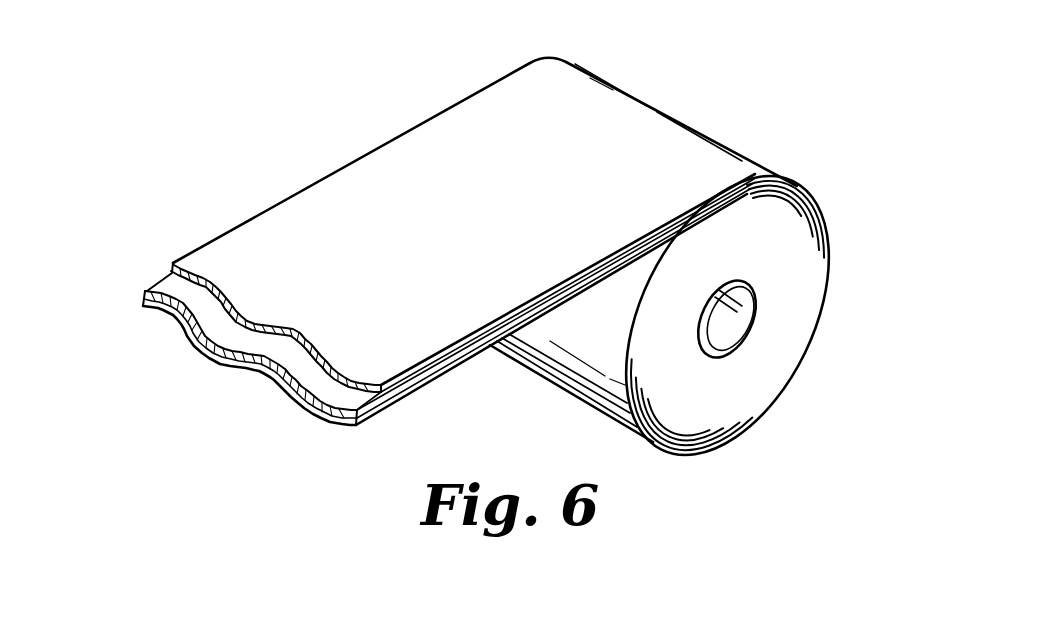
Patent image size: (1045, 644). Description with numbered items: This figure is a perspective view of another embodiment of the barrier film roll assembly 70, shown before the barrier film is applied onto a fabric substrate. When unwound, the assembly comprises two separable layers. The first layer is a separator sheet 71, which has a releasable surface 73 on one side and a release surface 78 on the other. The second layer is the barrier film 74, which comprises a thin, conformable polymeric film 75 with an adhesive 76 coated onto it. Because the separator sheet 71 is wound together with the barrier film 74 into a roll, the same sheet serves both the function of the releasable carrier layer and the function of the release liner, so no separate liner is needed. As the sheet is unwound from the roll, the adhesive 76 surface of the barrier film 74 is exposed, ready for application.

The roll of laminated sheet material 70 is at (706, 57).
The separator sheet 71 is at (348, 187).
The releasable surface 73 is at (196, 285).
The barrier film 74 is at (151, 265).
The thin, conformable polymeric film 75 is at (289, 388).
The adhesive 76 is at (163, 321).
The release surface 78 is at (468, 321).